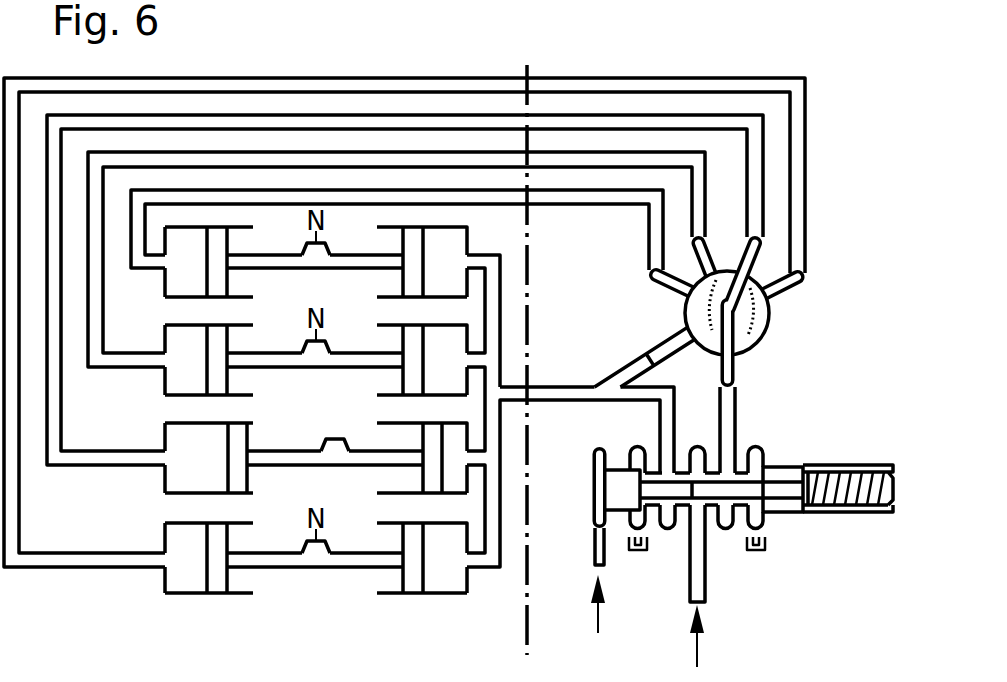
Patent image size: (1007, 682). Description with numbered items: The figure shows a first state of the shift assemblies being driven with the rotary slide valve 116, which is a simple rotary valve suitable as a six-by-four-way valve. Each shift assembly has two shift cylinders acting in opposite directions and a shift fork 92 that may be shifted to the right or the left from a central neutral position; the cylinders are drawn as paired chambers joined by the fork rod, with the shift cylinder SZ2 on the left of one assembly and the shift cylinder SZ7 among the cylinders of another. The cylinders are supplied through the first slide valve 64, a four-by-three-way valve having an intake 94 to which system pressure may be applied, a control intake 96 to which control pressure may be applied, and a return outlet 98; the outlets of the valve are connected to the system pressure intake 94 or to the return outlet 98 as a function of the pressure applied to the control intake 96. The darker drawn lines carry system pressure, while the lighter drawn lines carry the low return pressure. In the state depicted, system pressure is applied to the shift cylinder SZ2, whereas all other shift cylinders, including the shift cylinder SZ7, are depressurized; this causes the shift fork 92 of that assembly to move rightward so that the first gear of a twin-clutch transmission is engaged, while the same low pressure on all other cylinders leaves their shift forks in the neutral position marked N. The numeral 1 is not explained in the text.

The shift cylinder SZ2 is at (170, 443).
The shift cylinder SZ7 is at (453, 440).
The shift fork 92 is at (300, 451).
The detent notch 1 is at (333, 439).
The rotary slide valve 116 is at (790, 335).
The first slide valve 64 is at (846, 468).
The intake 94 is at (705, 580).
The control intake 96 is at (590, 548).
The return outlet 98 is at (808, 555).